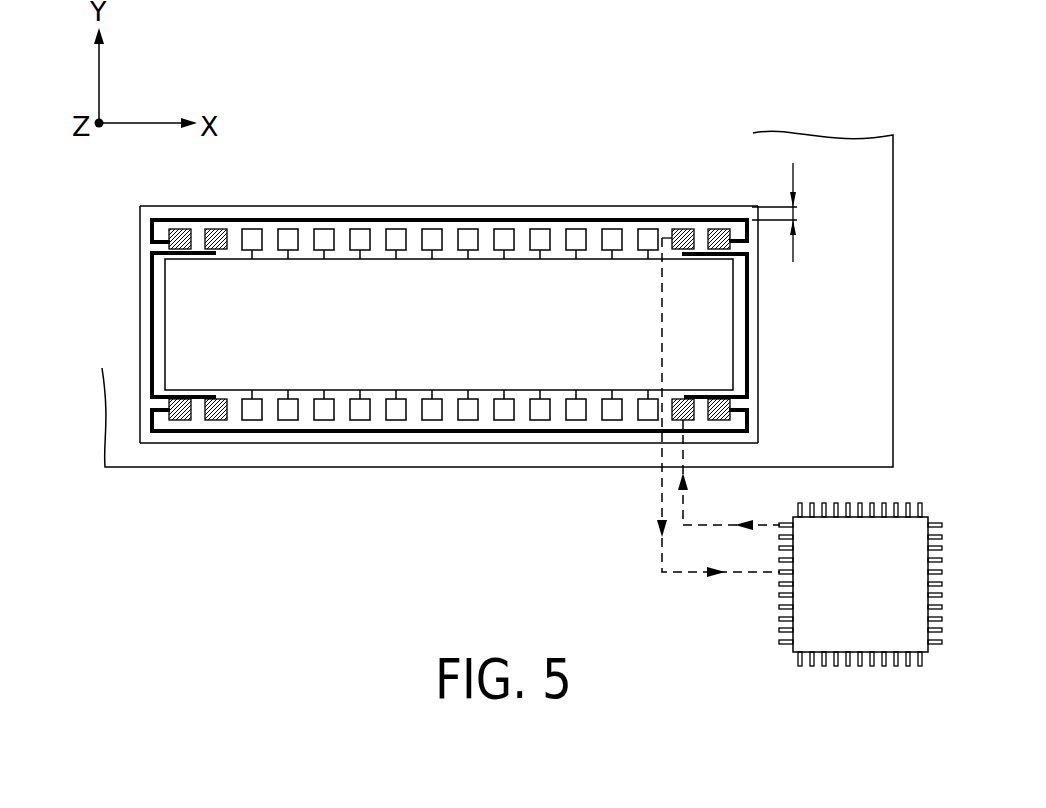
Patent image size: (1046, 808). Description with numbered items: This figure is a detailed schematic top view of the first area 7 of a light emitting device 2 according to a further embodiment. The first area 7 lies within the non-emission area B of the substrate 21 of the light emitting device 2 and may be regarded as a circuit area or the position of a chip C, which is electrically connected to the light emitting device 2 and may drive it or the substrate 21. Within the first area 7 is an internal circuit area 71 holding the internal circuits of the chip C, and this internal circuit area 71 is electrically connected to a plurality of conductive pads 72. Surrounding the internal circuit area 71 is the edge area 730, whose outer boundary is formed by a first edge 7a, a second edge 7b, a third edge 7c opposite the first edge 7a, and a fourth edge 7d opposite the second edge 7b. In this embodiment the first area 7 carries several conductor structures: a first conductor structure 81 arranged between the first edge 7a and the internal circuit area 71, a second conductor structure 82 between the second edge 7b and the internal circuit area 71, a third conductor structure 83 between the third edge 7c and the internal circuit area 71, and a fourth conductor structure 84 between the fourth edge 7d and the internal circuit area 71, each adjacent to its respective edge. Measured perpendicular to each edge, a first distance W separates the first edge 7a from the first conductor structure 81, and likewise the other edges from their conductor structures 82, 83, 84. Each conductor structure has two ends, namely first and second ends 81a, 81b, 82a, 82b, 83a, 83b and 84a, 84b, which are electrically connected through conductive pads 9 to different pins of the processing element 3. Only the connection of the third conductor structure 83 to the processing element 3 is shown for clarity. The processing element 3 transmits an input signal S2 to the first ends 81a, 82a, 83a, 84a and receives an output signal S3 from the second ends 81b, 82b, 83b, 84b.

The light emitting device 2 is at (893, 202).
The substrate 21 is at (855, 350).
The processing element 3 is at (823, 597).
The first area 7 is at (461, 332).
The first edge 7a is at (418, 207).
The second edge 7b is at (140, 310).
The third edge 7c is at (370, 444).
The fourth edge 7d is at (758, 290).
The internal circuit area 71 is at (183, 289).
The conductive pads 72 is at (502, 238).
The edge area 730 is at (537, 213).
The first conductor structure 81 is at (587, 217).
The first end of first conductor structure 81a is at (730, 223).
The second end of first conductor structure 81b is at (168, 242).
The second conductor structure 82 is at (148, 345).
The first end of second conductor structure 82a is at (216, 252).
The second end of second conductor structure 82b is at (218, 398).
The third conductor structure 83 is at (256, 433).
The first end of third conductor structure 83a is at (162, 431).
The second end of third conductor structure 83b is at (740, 407).
The fourth conductor structure 84 is at (747, 327).
The first end of fourth conductor structure 84a is at (683, 398).
The second end of fourth conductor structure 84b is at (677, 253).
The conductive pads 9 is at (182, 229).
The first distance W is at (794, 212).
The non-emission area B is at (872, 250).
The chip C is at (366, 170).
The input signal S2 is at (729, 475).
The output signal S3 is at (702, 407).